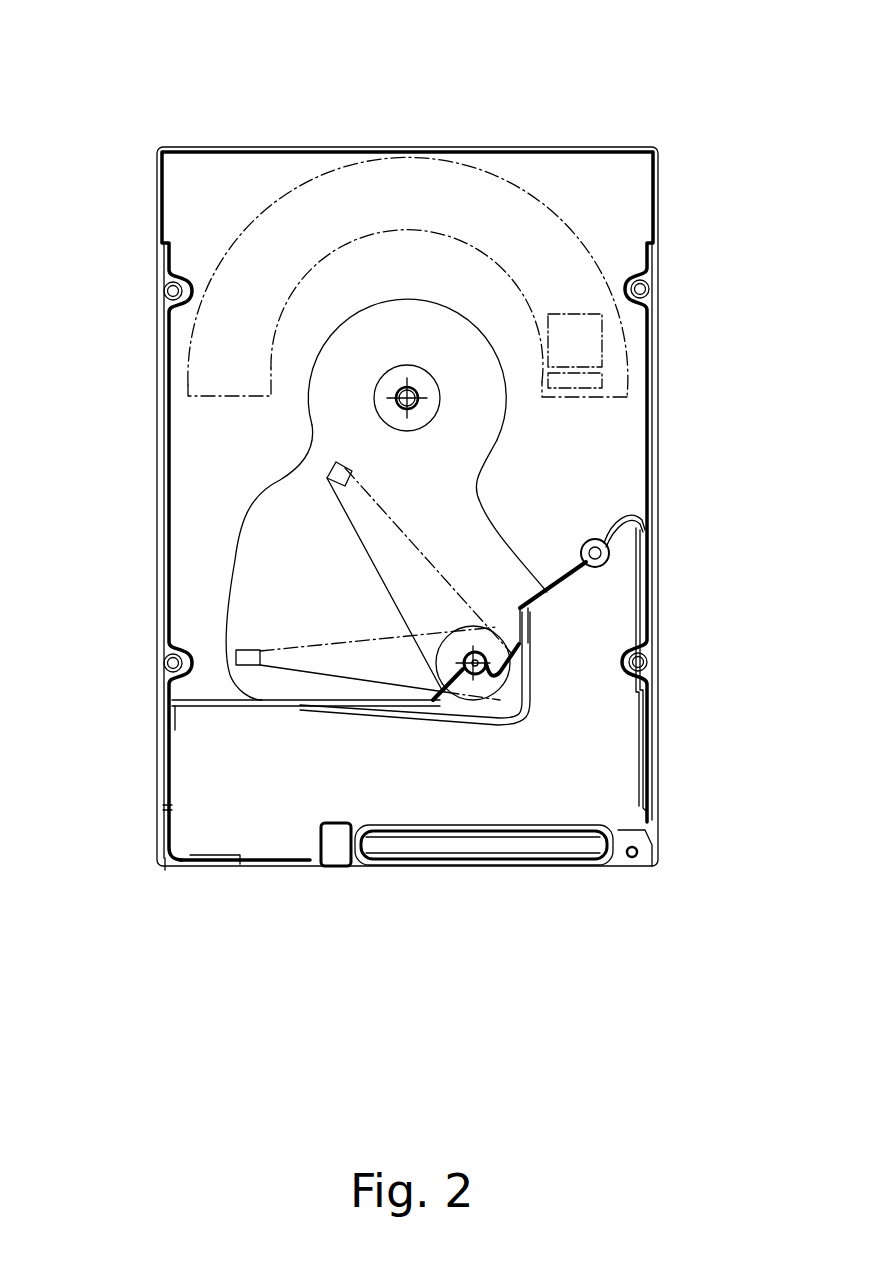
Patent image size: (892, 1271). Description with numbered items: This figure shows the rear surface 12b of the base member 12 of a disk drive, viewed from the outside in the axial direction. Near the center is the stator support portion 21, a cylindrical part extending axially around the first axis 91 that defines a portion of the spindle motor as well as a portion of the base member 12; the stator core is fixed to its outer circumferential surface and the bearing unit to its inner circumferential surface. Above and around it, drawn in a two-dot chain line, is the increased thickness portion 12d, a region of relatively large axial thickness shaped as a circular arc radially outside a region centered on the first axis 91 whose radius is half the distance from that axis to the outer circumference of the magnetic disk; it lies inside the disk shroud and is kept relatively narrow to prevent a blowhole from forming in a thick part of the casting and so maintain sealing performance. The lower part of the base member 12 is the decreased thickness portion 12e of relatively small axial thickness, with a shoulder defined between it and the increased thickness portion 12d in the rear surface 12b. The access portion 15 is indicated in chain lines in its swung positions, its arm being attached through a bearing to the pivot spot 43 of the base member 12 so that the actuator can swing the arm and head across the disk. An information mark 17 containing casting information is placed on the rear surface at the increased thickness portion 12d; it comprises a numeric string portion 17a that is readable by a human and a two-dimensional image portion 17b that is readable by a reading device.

The base member 12 is at (279, 105).
The rear surface 12b is at (186, 146).
The increased thickness portion 12d is at (497, 194).
The decreased thickness portion 12e is at (182, 763).
The access portion 15 is at (377, 591).
The information mark 17 is at (668, 356).
The numeric string portion 17a is at (602, 378).
The two-dimensional image portion 17b is at (602, 341).
The stator support portion 21 is at (388, 408).
The pivot spot 43 is at (485, 650).
The first axis 91 is at (418, 404).